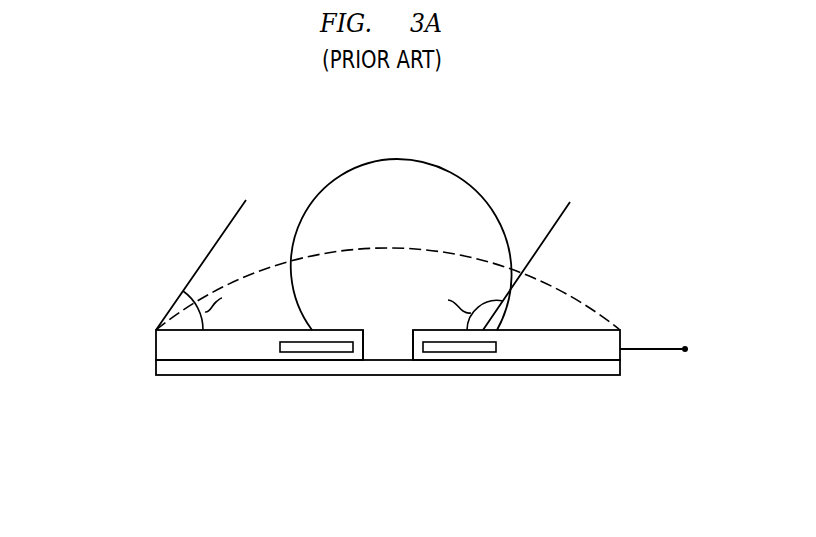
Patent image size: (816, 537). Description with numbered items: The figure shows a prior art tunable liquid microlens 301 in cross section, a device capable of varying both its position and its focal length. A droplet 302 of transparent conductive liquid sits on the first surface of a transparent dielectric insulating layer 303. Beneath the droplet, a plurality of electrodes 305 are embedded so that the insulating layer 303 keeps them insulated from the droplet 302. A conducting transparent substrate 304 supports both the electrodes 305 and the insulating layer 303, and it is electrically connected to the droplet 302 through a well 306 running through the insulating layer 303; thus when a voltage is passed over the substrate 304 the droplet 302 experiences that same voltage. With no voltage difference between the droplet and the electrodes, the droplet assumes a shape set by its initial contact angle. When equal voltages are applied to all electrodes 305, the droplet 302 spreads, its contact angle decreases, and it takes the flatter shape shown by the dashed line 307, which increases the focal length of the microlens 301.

The tunable liquid microlens 301 is at (110, 187).
The droplet 302 is at (460, 178).
The dielectric insulating layer 303 is at (156, 338).
The conducting transparent substrate 304 is at (263, 377).
The electrodes 305 is at (343, 352).
The well 306 is at (388, 342).
The dashed line 307 is at (573, 292).